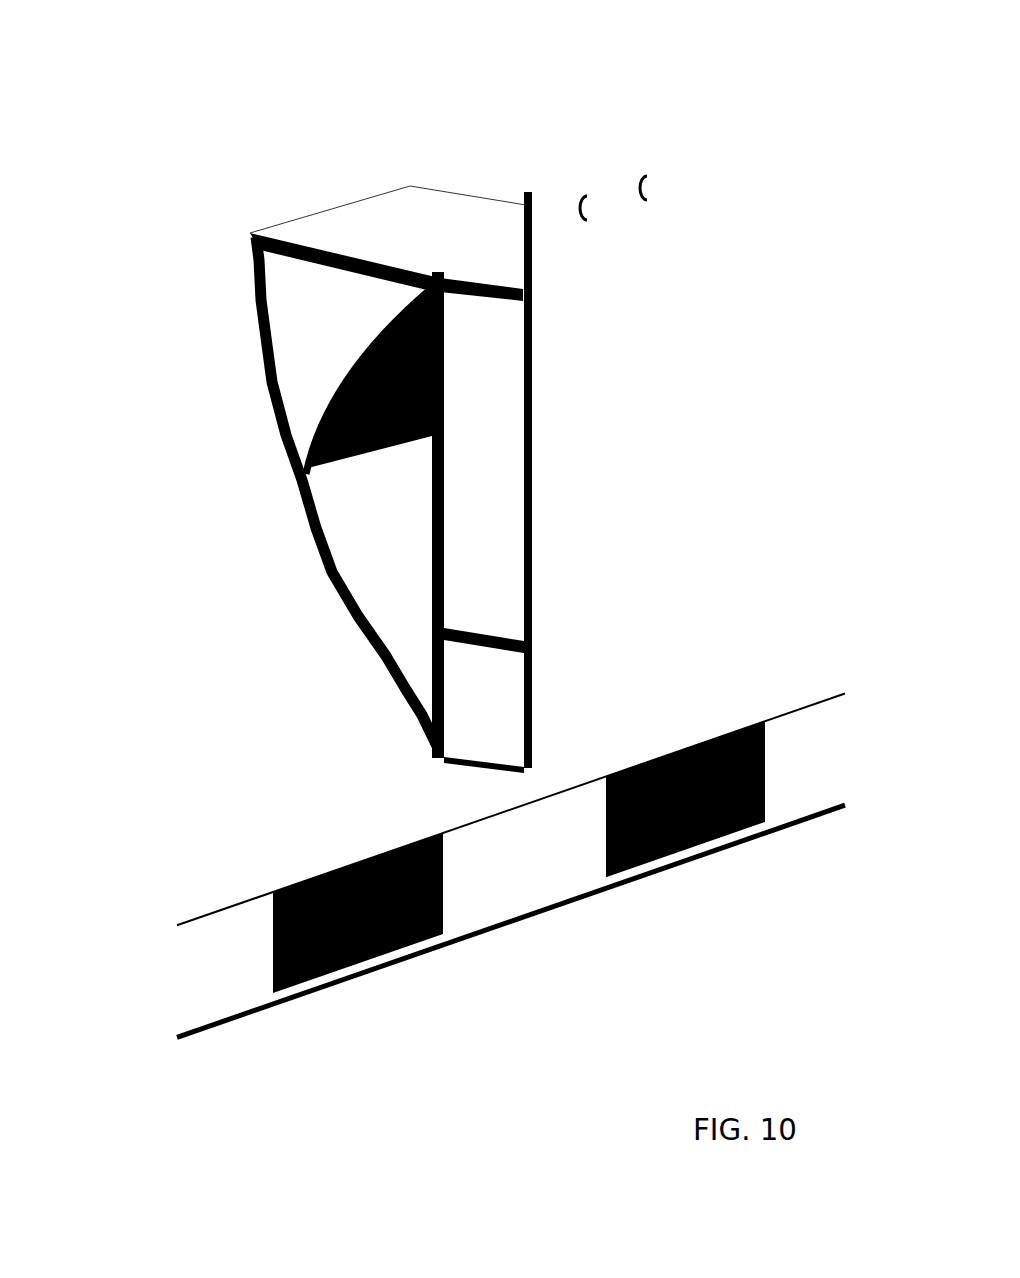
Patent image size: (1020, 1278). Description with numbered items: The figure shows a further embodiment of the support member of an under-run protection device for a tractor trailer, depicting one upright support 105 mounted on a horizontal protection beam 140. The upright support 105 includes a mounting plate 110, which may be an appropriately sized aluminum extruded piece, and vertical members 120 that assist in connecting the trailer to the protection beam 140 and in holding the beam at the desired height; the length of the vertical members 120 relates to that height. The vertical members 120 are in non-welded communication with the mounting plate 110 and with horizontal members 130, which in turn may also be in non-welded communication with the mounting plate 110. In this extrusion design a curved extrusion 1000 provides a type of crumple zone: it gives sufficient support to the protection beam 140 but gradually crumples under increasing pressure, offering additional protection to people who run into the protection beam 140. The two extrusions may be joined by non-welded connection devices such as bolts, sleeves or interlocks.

The upright support 105 is at (339, 150).
The mounting plate 110 is at (636, 288).
The vertical member 120 is at (476, 228).
The horizontal member 130 is at (493, 622).
The protection beam 140 is at (320, 795).
The curved extrusion 1000 is at (333, 480).